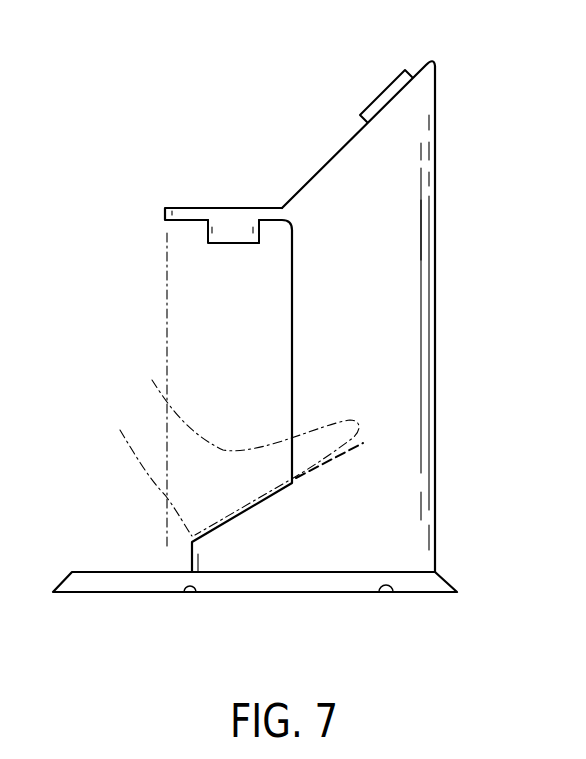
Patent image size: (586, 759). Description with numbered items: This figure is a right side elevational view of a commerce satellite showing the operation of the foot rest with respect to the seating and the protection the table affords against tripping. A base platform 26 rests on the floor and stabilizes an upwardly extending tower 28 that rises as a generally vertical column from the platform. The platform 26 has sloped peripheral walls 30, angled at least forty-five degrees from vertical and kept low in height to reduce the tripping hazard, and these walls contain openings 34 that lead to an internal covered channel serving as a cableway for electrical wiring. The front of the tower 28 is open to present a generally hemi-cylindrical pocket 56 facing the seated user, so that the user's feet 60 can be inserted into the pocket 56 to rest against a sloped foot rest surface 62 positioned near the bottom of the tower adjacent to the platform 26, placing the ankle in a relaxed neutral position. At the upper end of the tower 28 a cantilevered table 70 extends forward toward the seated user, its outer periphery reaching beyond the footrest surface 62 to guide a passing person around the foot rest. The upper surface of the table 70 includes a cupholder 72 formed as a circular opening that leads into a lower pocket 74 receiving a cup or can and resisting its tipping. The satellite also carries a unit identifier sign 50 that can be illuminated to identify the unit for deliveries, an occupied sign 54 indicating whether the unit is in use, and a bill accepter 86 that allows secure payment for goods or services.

The base platform 26 is at (118, 578).
The tower 28 is at (407, 231).
The peripheral walls 30 is at (256, 580).
The openings 34 is at (389, 598).
The unit identifier sign 50 is at (457, 83).
The occupied sign 54 is at (461, 107).
The hemi-cylindrical pocket 56 is at (286, 348).
The user's feet 60 is at (208, 440).
The foot rest surface 62 is at (330, 462).
The cantilevered table 70 is at (196, 207).
The cupholder 72 is at (213, 232).
The lower pocket 74 is at (235, 245).
The bill accepter 86 is at (371, 72).